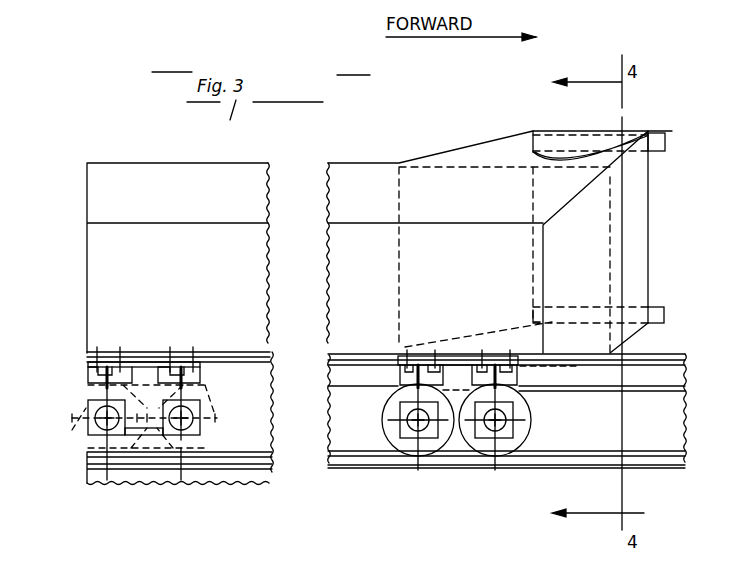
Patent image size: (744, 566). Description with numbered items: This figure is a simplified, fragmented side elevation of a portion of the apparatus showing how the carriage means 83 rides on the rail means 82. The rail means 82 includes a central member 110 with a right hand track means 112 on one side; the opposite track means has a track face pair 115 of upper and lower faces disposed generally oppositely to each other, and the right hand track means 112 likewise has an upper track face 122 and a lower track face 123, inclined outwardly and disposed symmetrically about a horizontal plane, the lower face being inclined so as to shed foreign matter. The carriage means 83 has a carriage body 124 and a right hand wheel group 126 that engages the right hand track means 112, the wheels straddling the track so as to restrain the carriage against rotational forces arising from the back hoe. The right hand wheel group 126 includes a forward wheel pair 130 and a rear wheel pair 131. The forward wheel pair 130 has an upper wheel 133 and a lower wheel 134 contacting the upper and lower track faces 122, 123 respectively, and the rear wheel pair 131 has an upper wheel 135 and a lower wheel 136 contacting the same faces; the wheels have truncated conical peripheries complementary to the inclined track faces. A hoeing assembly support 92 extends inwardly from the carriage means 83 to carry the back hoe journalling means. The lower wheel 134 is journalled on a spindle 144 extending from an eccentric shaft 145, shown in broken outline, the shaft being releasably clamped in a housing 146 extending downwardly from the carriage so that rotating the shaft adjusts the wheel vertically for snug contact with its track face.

The rail means 82 is at (314, 457).
The carriage means 83 is at (192, 182).
The hoeing assembly support 92 is at (496, 153).
The central member 110 is at (643, 445).
The right hand track means 112 is at (652, 406).
The track face pair 115 is at (654, 432).
The upper track face 122 is at (234, 385).
The lower track face 123 is at (268, 445).
The carriage body 124 is at (355, 275).
The right hand wheel group 126 is at (227, 442).
The forward wheel pair 130 is at (548, 418).
The rear wheel pair 131 is at (65, 441).
The upper wheel 133 is at (373, 402).
The lower wheel 134 is at (524, 447).
The upper wheel 135 is at (209, 395).
The lower wheel 136 is at (80, 405).
The spindle 144 is at (497, 425).
The eccentric shaft 145 is at (498, 450).
The housing 146 is at (523, 378).